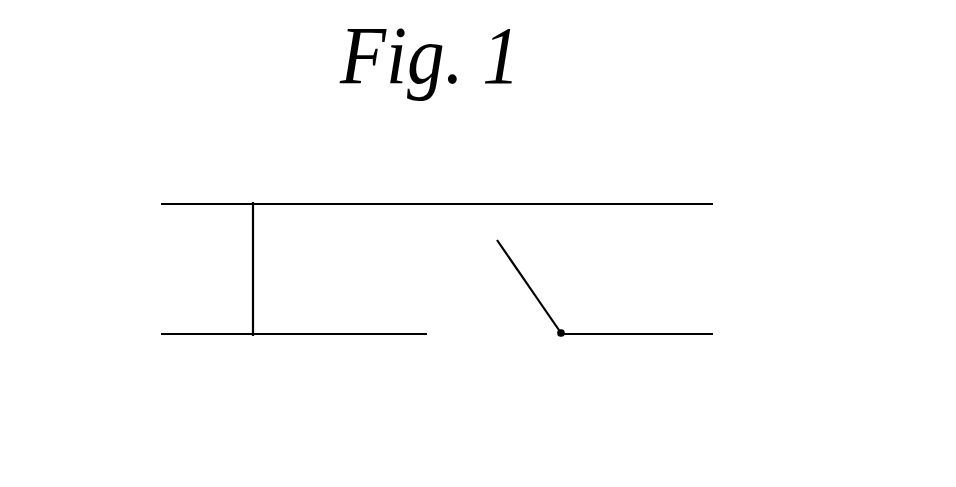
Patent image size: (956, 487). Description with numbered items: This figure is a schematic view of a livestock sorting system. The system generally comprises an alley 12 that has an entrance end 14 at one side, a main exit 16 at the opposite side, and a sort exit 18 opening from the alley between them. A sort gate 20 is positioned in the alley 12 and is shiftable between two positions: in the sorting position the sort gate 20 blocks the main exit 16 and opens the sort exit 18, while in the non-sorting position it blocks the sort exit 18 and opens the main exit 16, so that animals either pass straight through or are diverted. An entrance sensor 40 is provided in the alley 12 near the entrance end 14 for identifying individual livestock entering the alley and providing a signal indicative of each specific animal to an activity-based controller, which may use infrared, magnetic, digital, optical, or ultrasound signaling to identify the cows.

The alley 12 is at (523, 183).
The entrance end 14 is at (162, 271).
The main exit 16 is at (714, 272).
The sort exit 18 is at (482, 317).
The sort gate 20 is at (525, 279).
The entrance sensor 40 is at (253, 281).